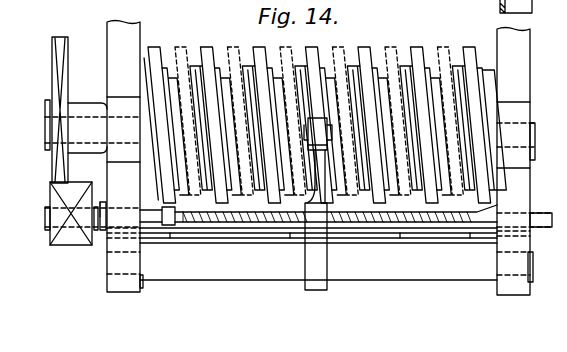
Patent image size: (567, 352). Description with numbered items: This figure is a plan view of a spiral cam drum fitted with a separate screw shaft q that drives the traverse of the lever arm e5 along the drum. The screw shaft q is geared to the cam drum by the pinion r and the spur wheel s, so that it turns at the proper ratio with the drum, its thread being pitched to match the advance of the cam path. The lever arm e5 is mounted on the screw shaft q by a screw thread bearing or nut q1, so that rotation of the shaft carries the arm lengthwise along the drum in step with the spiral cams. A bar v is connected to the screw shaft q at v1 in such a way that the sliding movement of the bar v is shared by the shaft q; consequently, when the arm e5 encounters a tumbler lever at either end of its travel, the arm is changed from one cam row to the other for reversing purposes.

The spur wheel s is at (53, 78).
The pinion r is at (52, 200).
The connection of bar to shaft v1 is at (100, 228).
The screw thread bearing or nut q1 is at (306, 232).
The lever arm e5 is at (328, 142).
The screw shaft q is at (539, 216).
The bar v is at (540, 243).